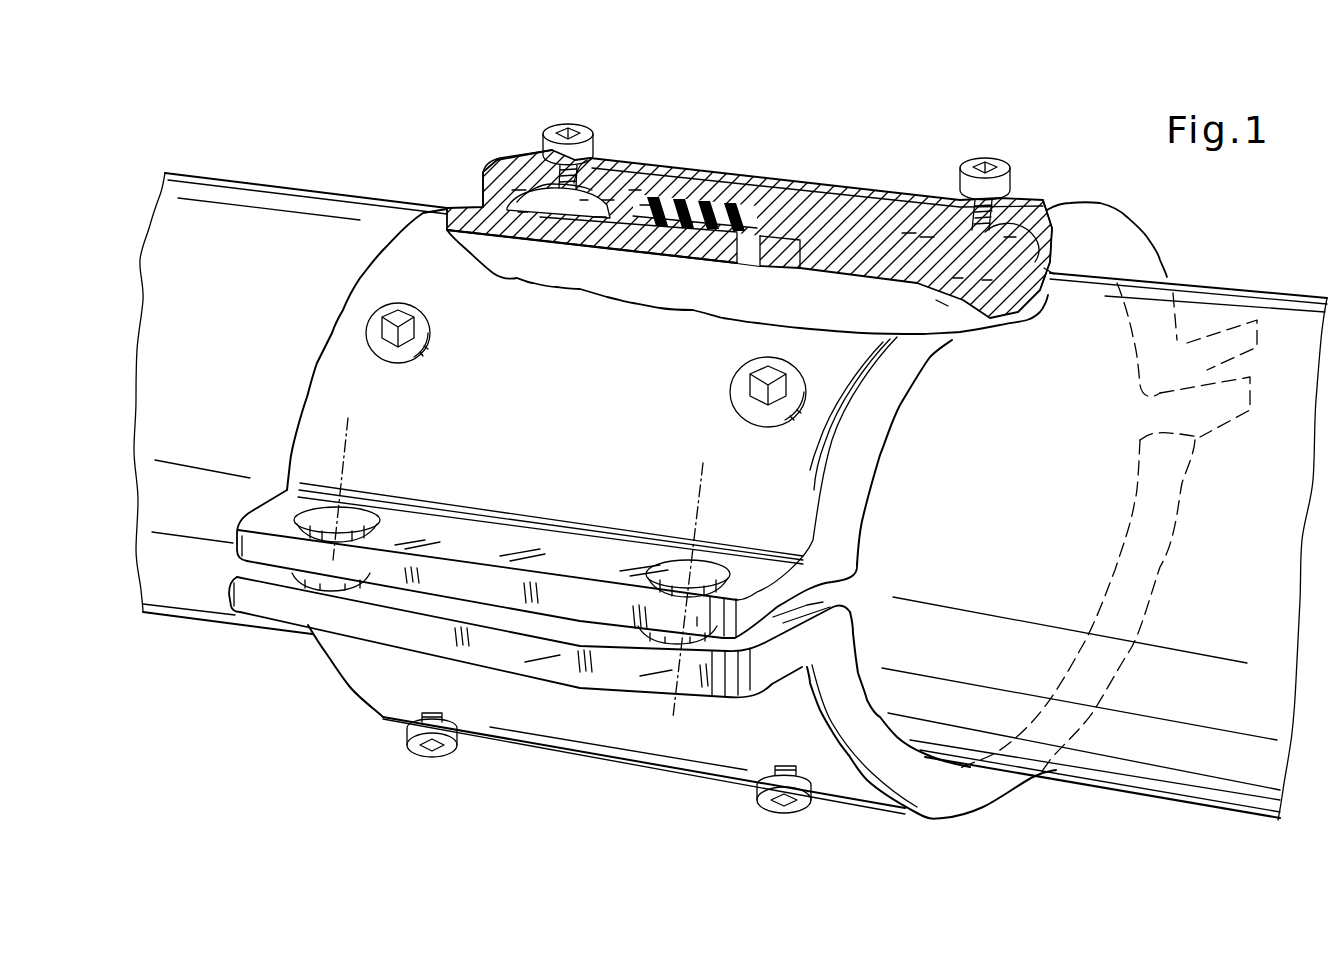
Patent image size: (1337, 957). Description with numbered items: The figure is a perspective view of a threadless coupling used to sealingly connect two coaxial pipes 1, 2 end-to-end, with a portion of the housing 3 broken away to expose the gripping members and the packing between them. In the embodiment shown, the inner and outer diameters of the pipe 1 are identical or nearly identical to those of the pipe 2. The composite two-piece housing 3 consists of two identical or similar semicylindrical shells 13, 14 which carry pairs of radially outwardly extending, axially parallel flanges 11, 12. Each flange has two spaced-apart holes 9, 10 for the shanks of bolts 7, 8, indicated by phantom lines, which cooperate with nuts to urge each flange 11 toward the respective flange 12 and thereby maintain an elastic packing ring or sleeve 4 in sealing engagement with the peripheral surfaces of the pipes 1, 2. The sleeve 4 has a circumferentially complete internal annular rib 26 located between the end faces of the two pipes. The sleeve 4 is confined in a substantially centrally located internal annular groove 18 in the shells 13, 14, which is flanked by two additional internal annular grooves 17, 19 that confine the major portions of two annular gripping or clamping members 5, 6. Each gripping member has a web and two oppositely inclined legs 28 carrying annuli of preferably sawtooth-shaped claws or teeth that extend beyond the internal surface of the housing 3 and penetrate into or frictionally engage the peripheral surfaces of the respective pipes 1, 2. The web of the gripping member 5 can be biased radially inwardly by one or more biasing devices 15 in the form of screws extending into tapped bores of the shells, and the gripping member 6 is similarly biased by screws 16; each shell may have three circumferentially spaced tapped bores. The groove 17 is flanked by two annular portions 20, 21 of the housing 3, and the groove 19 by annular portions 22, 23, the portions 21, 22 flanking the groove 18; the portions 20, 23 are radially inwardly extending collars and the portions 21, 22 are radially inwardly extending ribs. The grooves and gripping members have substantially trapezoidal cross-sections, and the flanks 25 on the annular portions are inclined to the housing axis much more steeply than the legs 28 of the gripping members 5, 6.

The pipe 1 is at (319, 176).
The pipe 2 is at (1216, 285).
The housing 3 is at (332, 286).
The packing ring or sleeve 4 is at (750, 212).
The gripping member 5 is at (527, 190).
The gripping member 6 is at (1037, 210).
The bolt 7 is at (348, 442).
The bolt 8 is at (707, 492).
The hole 9 is at (294, 510).
The hole 10 is at (670, 560).
The flange 11 is at (247, 512).
The flange 12 is at (230, 590).
The semicylindrical shell 13 is at (315, 362).
The semicylindrical shell 14 is at (333, 682).
The biasing device 15 is at (588, 131).
The screw 16 is at (971, 160).
The internal annular groove 17 is at (600, 217).
The annular groove 18 is at (648, 205).
The internal annular groove 19 is at (945, 330).
The annular portion 20 is at (490, 190).
The annular portion 21 is at (635, 190).
The annular portion 22 is at (909, 233).
The annular portion 23 is at (1050, 272).
The flank 25 is at (519, 190).
The internal annular rib 26 is at (757, 253).
The leg 28 is at (582, 200).